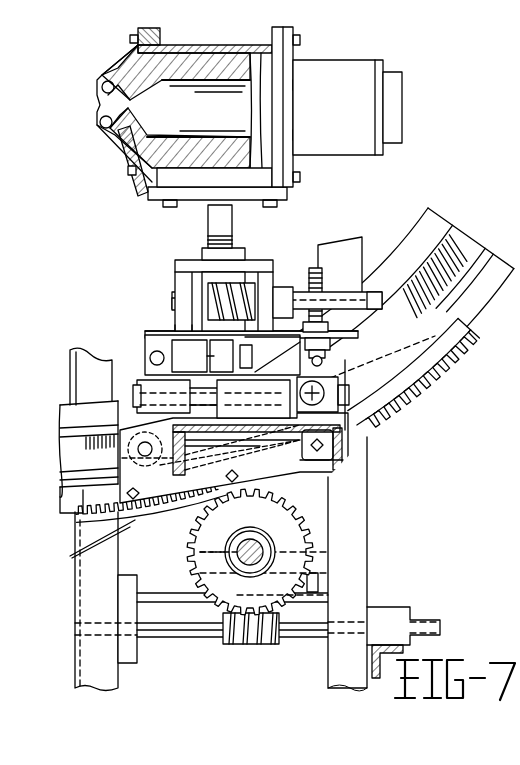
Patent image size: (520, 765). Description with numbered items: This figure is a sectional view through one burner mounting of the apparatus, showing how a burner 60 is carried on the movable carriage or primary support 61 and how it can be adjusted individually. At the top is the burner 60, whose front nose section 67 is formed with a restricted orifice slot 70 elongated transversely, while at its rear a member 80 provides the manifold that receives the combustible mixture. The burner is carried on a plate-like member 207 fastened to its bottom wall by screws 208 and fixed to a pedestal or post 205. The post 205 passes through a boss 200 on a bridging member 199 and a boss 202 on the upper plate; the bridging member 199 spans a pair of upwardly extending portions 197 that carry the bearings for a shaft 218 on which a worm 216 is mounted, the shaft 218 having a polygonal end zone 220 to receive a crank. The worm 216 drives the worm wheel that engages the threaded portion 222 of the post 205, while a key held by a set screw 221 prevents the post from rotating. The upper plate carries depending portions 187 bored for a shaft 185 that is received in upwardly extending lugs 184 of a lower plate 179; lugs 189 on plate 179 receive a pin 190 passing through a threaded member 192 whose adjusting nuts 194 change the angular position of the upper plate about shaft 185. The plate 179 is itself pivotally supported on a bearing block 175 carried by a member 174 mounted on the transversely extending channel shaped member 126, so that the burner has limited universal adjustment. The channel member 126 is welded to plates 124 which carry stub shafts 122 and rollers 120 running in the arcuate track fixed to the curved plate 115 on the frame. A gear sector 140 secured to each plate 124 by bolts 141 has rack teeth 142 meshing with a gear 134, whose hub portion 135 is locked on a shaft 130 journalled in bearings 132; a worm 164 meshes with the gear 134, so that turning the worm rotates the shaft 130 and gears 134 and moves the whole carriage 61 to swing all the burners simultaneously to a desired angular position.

The burner 60 is at (208, 38).
The nose section 67 is at (90, 96).
The restricted orifice means or slot 70 is at (110, 110).
The member providing a manifold 80 is at (320, 66).
The curved or arcuately shaped plate 115 is at (472, 243).
The rollers 120 is at (440, 378).
The stub shafts 122 is at (145, 441).
The plates 124 is at (343, 426).
The channel shaped member 126 is at (342, 462).
The shaft 130 is at (238, 545).
The bearings 132 is at (200, 552).
The gears 134 is at (305, 528).
The hub portion 135 is at (280, 548).
The gear section or sector 140 is at (78, 512).
The bolts 141 is at (333, 445).
The rack or gear teeth 142 is at (70, 556).
The worm 164 is at (258, 647).
The member 174 is at (225, 440).
The bearing block 175 is at (255, 420).
The plate 179 is at (137, 393).
The upwardly extending lugs 184 is at (145, 352).
The shaft 185 is at (145, 335).
The depending portions 187 is at (163, 340).
The lugs 189 is at (352, 346).
The pin 190 is at (330, 366).
The threaded member 192 is at (322, 278).
The adjusting nuts 194 is at (322, 330).
The upwardly extending portions 197 is at (177, 272).
The member 199 is at (252, 264).
The boss 200 is at (205, 248).
The boss 202 is at (222, 355).
The shaft or pedestal 205 is at (232, 230).
The plate-like member 207 is at (145, 200).
The screws 208 is at (168, 208).
The worm 216 is at (212, 303).
The shaft 218 is at (368, 314).
The end zone 220 is at (384, 299).
The set screw 221 is at (255, 354).
The threaded portion 222 is at (194, 364).
The carriage or primary support 61 is at (345, 470).